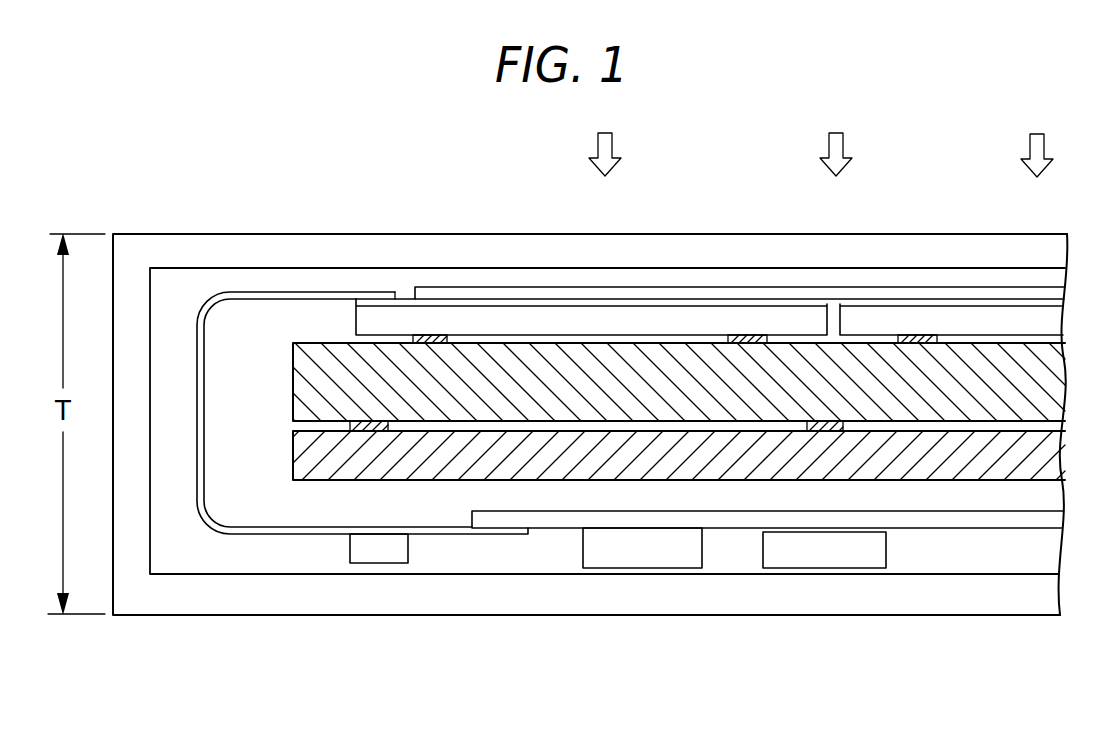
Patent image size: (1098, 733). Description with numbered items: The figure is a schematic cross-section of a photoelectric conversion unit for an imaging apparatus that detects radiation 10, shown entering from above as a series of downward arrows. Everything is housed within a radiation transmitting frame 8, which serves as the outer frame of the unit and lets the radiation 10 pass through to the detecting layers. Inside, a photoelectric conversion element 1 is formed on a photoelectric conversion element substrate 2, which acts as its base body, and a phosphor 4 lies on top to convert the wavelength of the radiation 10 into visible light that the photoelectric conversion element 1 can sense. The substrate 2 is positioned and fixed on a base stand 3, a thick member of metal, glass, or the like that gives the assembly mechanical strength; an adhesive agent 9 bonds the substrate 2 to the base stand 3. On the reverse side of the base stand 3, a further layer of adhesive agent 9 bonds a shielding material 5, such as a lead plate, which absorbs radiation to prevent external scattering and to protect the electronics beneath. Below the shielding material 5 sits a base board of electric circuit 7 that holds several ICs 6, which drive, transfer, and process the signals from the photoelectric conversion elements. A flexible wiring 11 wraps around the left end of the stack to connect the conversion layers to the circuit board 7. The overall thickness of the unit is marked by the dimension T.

The photoelectric conversion element 1 is at (428, 306).
The photoelectric conversion element substrate 2 is at (380, 315).
The base stand 3 is at (560, 400).
The phosphor 4 is at (493, 295).
The shielding material 5 is at (460, 465).
The ICs 6 is at (385, 550).
The base board of electric circuit 7 is at (1000, 520).
The radiation transmitting frame 8 is at (255, 614).
The adhesive agent 9 is at (910, 340).
The radiation 10 is at (614, 140).
The flexible wiring 11 is at (242, 298).